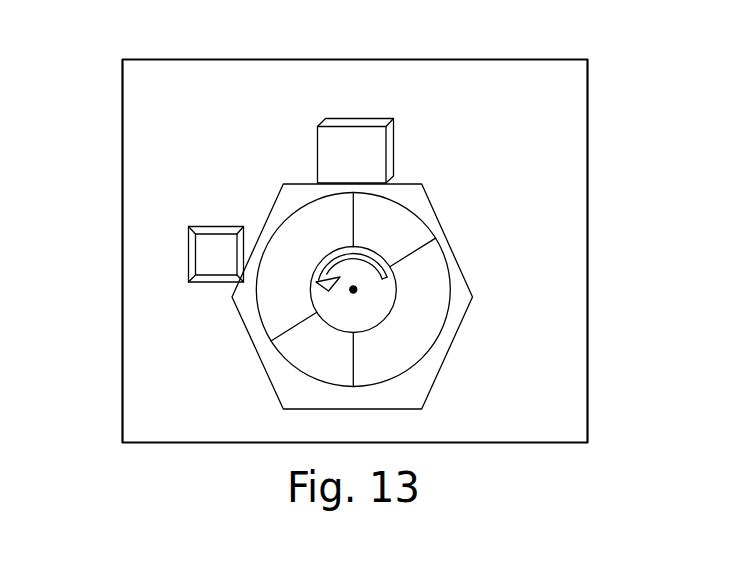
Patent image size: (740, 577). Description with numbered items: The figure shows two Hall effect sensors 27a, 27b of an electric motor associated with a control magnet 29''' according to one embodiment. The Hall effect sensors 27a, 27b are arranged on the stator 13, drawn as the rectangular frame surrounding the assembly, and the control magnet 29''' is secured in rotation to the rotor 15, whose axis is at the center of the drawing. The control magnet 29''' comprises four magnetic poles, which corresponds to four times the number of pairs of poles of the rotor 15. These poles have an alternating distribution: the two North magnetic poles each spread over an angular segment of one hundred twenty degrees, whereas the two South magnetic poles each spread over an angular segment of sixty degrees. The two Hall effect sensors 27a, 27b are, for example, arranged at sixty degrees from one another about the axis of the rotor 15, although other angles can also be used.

The stator 13 is at (563, 137).
The Hall effect sensor 27a is at (353, 140).
The Hall effect sensor 27b is at (202, 252).
The control magnet 29''' is at (337, 276).
The rotor 15 is at (357, 290).